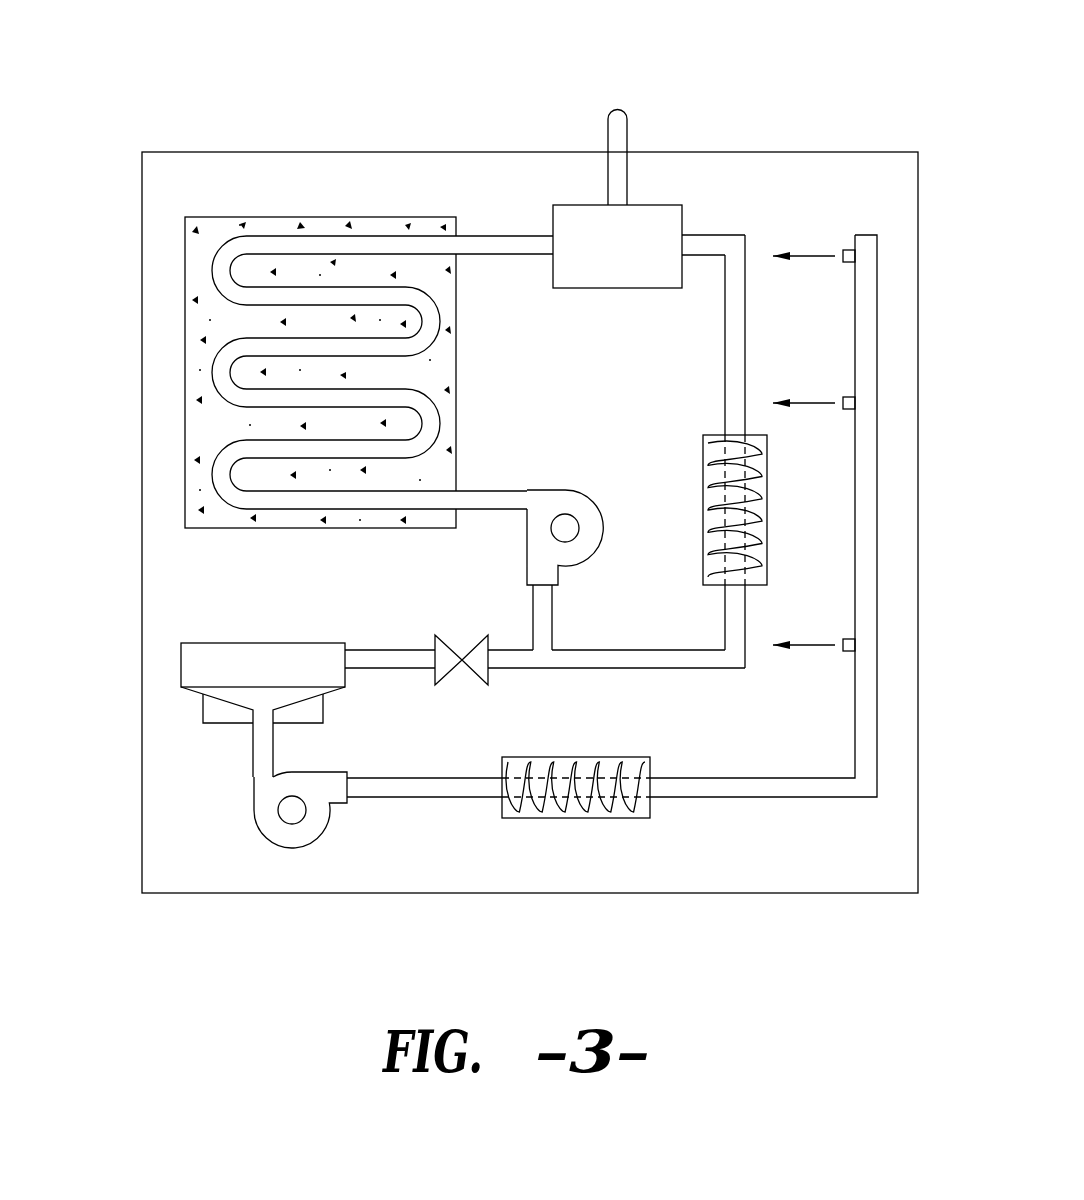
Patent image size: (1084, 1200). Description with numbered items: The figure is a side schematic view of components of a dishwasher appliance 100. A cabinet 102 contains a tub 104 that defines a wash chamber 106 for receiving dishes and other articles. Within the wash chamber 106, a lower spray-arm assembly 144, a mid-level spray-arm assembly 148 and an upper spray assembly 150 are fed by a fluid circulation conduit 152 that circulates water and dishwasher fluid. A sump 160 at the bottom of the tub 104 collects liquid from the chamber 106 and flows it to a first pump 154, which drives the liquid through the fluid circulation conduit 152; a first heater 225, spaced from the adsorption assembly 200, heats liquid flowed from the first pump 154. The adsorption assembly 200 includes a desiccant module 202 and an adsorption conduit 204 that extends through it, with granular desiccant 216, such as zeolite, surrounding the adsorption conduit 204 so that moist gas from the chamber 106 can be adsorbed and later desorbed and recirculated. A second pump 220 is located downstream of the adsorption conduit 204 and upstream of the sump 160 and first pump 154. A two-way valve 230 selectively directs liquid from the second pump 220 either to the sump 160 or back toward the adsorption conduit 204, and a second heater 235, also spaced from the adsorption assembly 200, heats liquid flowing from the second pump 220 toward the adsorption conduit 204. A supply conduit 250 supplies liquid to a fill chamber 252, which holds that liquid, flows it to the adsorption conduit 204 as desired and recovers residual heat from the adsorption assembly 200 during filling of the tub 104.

The dishwasher appliance 100 is at (240, 90).
The cabinet 102 is at (484, 143).
The tub 104 is at (252, 597).
The wash chamber 106 is at (210, 546).
The lower spray-arm assembly 144 is at (848, 639).
The mid-level spray-arm assembly 148 is at (848, 397).
The upper spray assembly 150 is at (848, 250).
The fluid circulation conduit 152 is at (757, 797).
The first pump 154 is at (280, 830).
The sump 160 is at (284, 681).
The adsorption assembly 200 is at (168, 265).
The desiccant module 202 is at (313, 217).
The adsorption conduit 204 is at (410, 242).
The granular desiccant 216 is at (210, 238).
The second pump 220 is at (580, 508).
The first heater 225 is at (602, 757).
The valve 230 is at (450, 640).
The second heater 235 is at (703, 514).
The supply conduit 250 is at (636, 130).
The fill chamber 252 is at (638, 256).